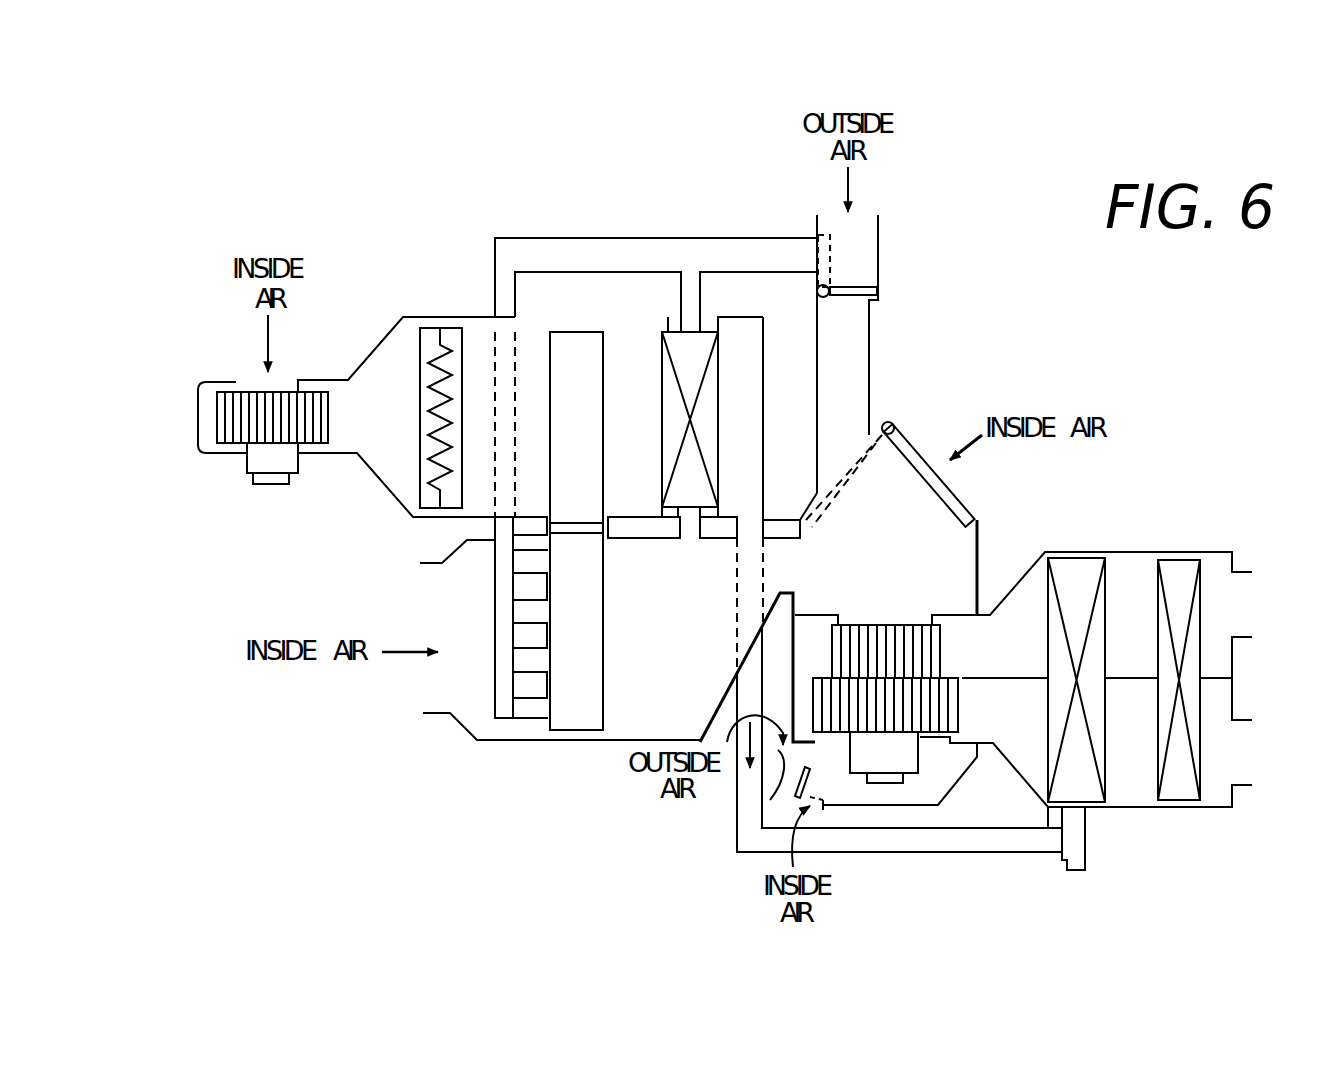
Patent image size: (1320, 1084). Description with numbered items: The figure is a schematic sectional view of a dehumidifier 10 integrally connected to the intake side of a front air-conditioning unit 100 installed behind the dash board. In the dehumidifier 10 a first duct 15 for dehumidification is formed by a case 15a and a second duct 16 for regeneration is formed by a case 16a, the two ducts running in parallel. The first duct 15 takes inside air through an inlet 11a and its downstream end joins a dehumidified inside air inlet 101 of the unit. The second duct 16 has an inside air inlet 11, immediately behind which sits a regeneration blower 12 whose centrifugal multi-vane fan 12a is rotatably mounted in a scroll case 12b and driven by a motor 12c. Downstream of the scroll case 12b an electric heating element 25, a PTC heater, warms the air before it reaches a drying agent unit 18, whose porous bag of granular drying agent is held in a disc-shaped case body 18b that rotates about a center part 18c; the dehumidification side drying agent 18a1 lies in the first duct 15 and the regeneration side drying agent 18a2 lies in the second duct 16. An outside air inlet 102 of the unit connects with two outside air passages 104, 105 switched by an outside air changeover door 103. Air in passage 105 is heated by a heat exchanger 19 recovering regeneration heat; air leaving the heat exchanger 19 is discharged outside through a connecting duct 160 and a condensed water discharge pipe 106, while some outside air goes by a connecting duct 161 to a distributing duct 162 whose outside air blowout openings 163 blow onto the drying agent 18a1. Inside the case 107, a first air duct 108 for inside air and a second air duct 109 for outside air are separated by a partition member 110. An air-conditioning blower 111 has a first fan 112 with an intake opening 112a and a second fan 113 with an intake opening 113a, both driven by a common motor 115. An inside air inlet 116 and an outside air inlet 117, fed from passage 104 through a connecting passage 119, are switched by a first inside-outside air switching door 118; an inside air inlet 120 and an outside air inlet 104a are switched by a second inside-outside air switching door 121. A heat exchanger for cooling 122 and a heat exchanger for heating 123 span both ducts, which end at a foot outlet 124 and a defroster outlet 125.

The dehumidifier 10 is at (458, 294).
The inside air inlet 11 is at (248, 375).
The inlet 11a is at (440, 685).
The regeneration blower 12 is at (229, 433).
The centrifugal multi-vane fan 12a is at (240, 420).
The scroll case 12b is at (199, 402).
The motor 12c is at (255, 465).
The first duct 15 is at (468, 643).
The case 15a is at (607, 740).
The second duct 16 is at (530, 388).
The case 16a is at (598, 317).
The drying agent unit 18 is at (591, 435).
The dehumidification side drying agent 18a1 is at (562, 720).
The regeneration side drying agent 18a2 is at (573, 358).
The case body 18b is at (605, 360).
The center part 18c is at (570, 525).
The heat exchanger 19 is at (710, 387).
The electric heating element 25 is at (417, 375).
The front air-conditioning unit 100 is at (1145, 462).
The dehumidified inside air inlet 101 is at (790, 560).
The outside air inlet 102 is at (858, 215).
The outside air changeover door 103 is at (855, 285).
The outside air passage 104 is at (848, 327).
The outside air inlet 104a is at (838, 452).
The outside air passage 105 is at (795, 255).
The condensed water discharge pipe 106 is at (1077, 838).
The case 107 is at (1167, 552).
The first air duct 108 is at (1127, 728).
The second air duct 109 is at (1120, 577).
The partition member 110 is at (1132, 675).
The air-conditioning blower 111 is at (931, 771).
The first fan 112 is at (943, 705).
The intake opening 112a is at (928, 738).
The second fan 113 is at (922, 658).
The intake opening 113a is at (883, 615).
The common motor 115 is at (875, 757).
The inside air inlet 116 is at (818, 813).
The outside air inlet 117 is at (797, 795).
The first inside-outside air switching door 118 is at (783, 790).
The connecting passage 119 is at (777, 787).
The inside air inlet 120 is at (935, 455).
The second inside-outside air switching door 121 is at (917, 447).
The heat exchanger for cooling 122 is at (1075, 568).
The heat exchanger for heating 123 is at (1183, 568).
The foot outlet 124 is at (1250, 735).
The defroster outlet 125 is at (1250, 585).
The connecting duct 160 is at (765, 800).
The connecting duct 161 is at (500, 237).
The distributing duct 162 is at (500, 633).
The outside air blowout openings 163 is at (532, 613).